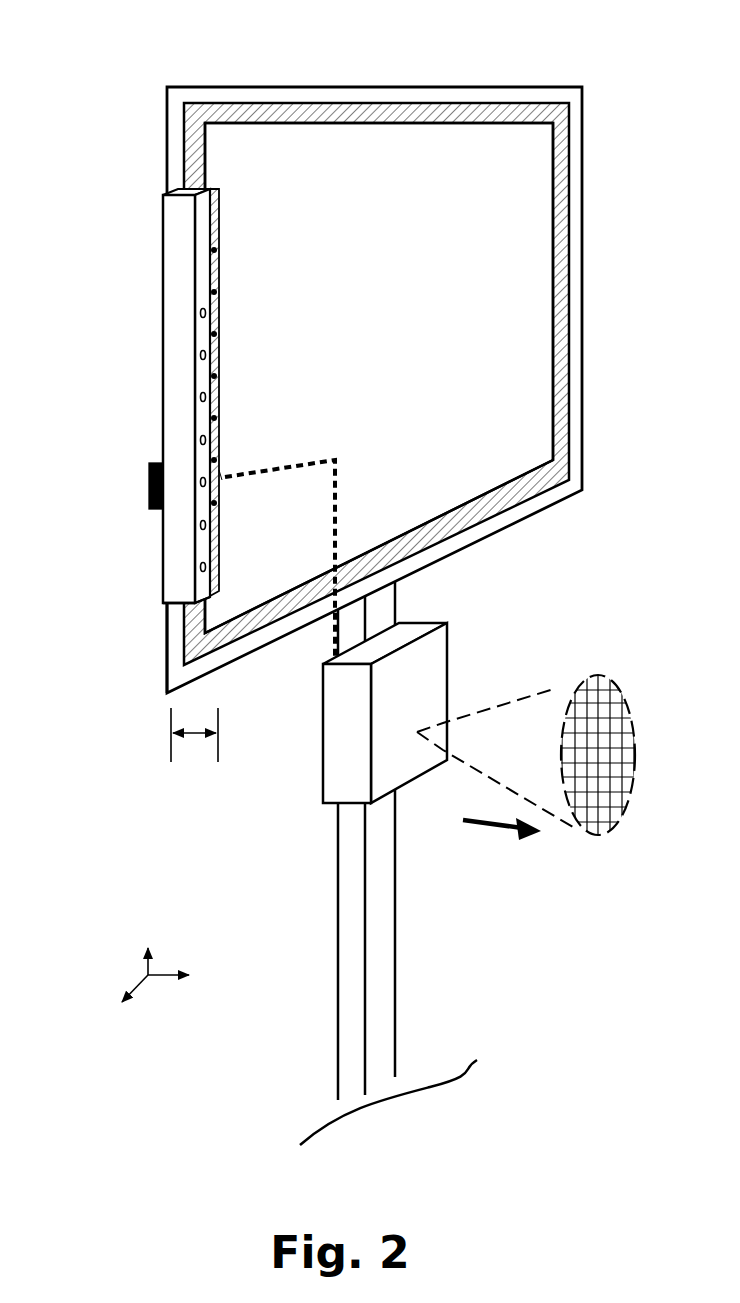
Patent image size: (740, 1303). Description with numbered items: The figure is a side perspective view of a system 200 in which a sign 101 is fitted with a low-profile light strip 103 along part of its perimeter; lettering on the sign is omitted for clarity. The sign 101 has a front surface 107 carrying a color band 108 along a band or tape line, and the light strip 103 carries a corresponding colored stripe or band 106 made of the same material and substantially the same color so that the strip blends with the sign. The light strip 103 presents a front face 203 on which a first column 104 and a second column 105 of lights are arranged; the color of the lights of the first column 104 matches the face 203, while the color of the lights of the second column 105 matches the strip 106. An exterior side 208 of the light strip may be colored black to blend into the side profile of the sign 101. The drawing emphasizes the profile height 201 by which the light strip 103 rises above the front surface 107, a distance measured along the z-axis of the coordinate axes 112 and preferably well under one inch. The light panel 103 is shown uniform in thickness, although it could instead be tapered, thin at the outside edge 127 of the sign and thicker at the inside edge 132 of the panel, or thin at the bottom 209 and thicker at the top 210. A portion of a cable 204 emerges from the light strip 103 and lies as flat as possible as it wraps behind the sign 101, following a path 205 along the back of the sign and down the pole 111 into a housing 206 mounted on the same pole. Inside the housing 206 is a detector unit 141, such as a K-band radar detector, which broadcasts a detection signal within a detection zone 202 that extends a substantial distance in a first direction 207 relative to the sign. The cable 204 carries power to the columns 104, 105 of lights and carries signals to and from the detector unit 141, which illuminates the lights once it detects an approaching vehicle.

The sign 101 is at (531, 179).
The light strip 103 is at (182, 448).
The first column of lights 104 is at (196, 313).
The second column of lights 105 is at (224, 290).
The colored stripe or band 106 is at (256, 392).
The front surface 107 is at (418, 220).
The color band 108 is at (195, 122).
The pole 111 is at (380, 918).
The coordinate axes 112 is at (170, 978).
The outside edge 127 is at (164, 652).
The inside edge 132 is at (234, 496).
The detector unit 141 is at (447, 698).
The system 200 is at (419, 40).
The profile height 201 is at (190, 737).
The detection zone 202 is at (555, 690).
The face of the light strip 203 is at (209, 595).
The cable 204 is at (149, 485).
The path 205 is at (298, 462).
The housing 206 is at (415, 630).
The first direction 207 is at (493, 828).
The exterior side 208 is at (170, 395).
The bottom 209 is at (170, 608).
The top 210 is at (175, 190).